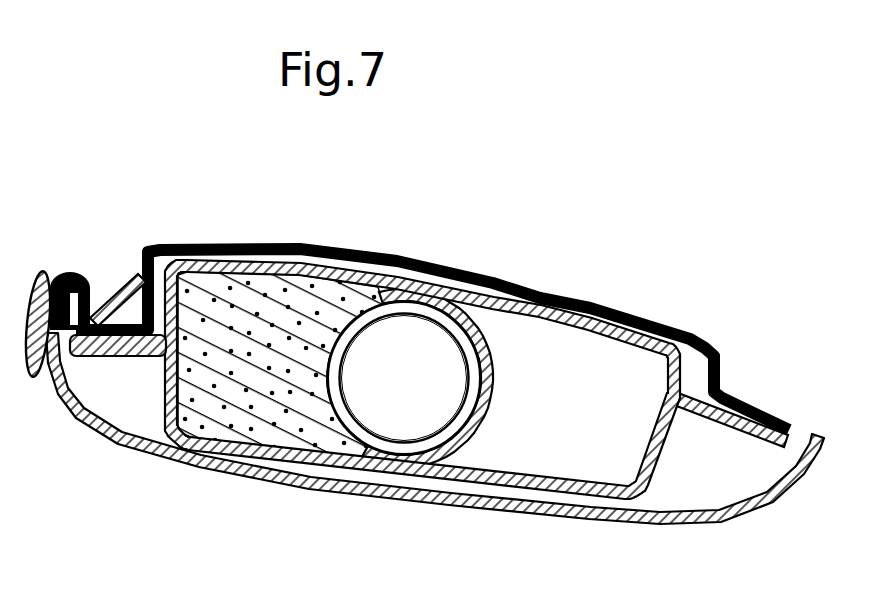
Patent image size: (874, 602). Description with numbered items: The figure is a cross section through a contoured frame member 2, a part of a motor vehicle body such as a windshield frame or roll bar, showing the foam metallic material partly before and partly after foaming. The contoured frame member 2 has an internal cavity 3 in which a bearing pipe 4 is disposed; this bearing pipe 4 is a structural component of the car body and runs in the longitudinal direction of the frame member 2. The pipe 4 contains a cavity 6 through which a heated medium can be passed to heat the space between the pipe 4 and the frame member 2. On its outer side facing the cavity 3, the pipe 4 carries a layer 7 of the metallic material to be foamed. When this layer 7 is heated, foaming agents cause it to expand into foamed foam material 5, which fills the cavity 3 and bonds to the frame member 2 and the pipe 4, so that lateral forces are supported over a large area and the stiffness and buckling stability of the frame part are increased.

The contoured frame member 2 is at (177, 428).
The internal cavity 3 is at (607, 472).
The bearing pipe 4 is at (373, 437).
The foamed metallic foam material 5 is at (247, 430).
The cavity 6 is at (427, 417).
The layer 7 is at (473, 417).